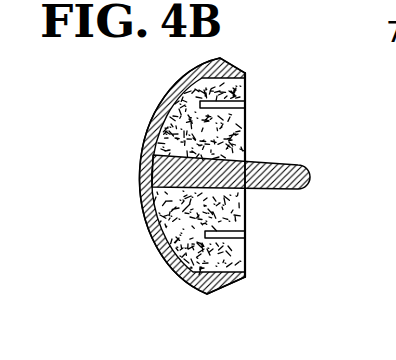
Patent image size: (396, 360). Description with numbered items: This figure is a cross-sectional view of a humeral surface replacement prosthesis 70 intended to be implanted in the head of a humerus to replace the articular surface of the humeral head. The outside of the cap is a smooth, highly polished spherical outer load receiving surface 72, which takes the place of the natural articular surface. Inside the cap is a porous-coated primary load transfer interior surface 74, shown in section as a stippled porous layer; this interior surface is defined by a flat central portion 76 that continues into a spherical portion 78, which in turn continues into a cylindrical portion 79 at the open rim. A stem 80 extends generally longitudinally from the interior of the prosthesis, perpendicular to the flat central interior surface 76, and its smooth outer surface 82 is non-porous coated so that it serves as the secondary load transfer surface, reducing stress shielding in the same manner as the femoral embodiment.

The humeral surface replacement prosthesis 70 is at (242, 53).
The spherical outer load receiving surface 72 is at (143, 140).
The porous-coated primary load transfer interior surface 74 is at (184, 125).
The flat central portion 76 is at (147, 216).
The spherical portion 78 is at (178, 262).
The cylindrical portion 79 is at (245, 88).
The stem 80 is at (282, 190).
The smooth outer surface 82 is at (278, 163).